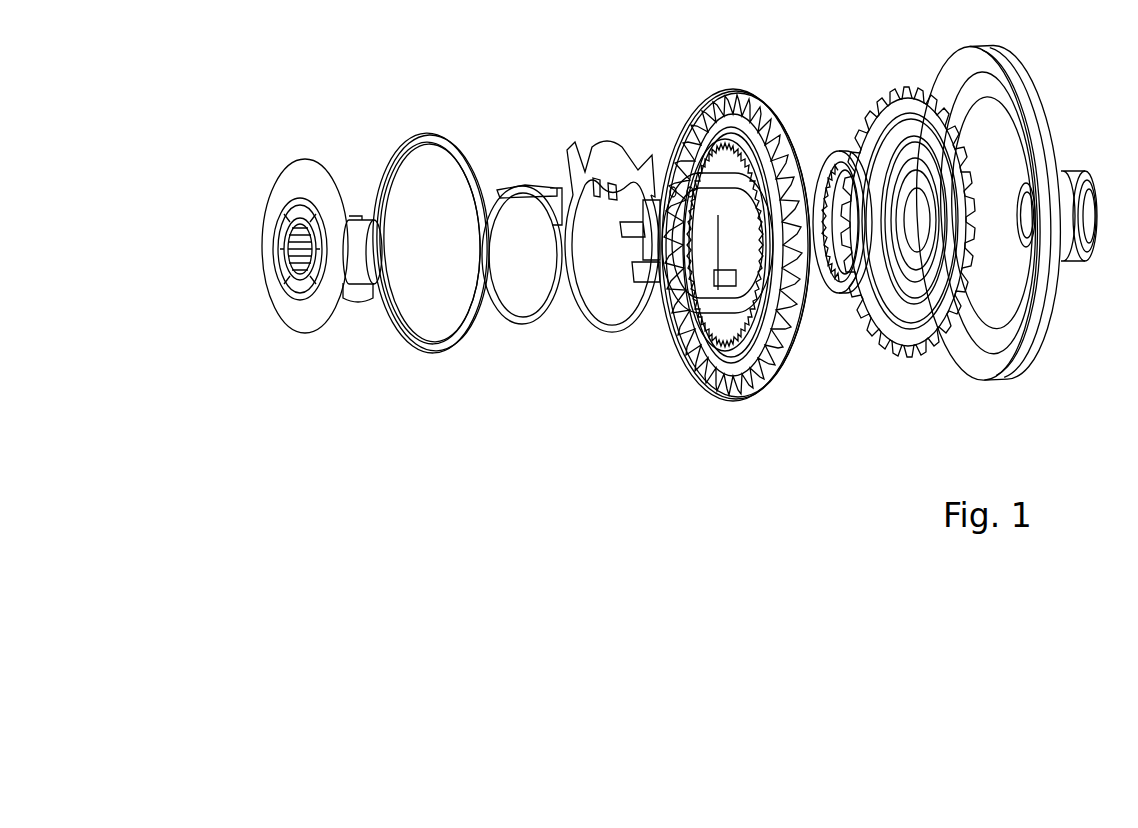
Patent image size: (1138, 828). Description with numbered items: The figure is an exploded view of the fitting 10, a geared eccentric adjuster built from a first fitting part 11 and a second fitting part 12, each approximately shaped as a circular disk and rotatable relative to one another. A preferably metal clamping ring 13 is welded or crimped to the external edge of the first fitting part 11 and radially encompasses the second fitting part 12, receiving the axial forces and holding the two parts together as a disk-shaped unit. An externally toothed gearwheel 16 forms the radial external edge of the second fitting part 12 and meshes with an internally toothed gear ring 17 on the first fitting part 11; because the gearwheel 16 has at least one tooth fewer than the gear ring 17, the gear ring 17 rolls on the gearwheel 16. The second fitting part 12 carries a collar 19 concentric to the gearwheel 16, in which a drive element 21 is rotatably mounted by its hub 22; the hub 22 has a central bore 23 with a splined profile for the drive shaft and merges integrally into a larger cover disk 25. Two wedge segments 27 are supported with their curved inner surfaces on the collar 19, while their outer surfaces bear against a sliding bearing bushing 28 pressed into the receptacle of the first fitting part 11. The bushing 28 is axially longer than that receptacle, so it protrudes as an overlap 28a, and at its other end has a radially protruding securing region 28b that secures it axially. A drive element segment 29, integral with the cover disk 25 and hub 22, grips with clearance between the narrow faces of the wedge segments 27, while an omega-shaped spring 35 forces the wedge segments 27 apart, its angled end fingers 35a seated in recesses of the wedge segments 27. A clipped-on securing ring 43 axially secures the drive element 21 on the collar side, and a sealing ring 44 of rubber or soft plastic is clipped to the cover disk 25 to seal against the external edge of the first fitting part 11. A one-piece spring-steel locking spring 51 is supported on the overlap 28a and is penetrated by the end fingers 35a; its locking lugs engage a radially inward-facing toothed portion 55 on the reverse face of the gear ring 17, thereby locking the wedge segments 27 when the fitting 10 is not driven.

The fitting 10 is at (528, 53).
The first fitting part 11 is at (720, 253).
The second fitting part 12 is at (917, 362).
The clamping ring 13 is at (967, 384).
The externally toothed gearwheel 16 is at (895, 226).
The internally toothed gear ring 17 is at (713, 88).
The collar 19 is at (914, 240).
The drive element 21 is at (305, 257).
The hub 22 is at (365, 220).
The bore 23 is at (282, 255).
The cover disk 25 is at (305, 160).
The wedge segments 27 is at (662, 294).
The sliding bearing bushing 28 is at (848, 200).
The overlap 28a is at (830, 152).
The securing region 28b is at (880, 88).
The drive element segment 29 is at (349, 300).
The omega-shaped spring 35 is at (537, 247).
The end fingers 35a is at (555, 195).
The securing ring 43 is at (1072, 266).
The sealing ring 44 is at (432, 353).
The locking spring 51 is at (606, 338).
The toothed portion 55 is at (679, 132).